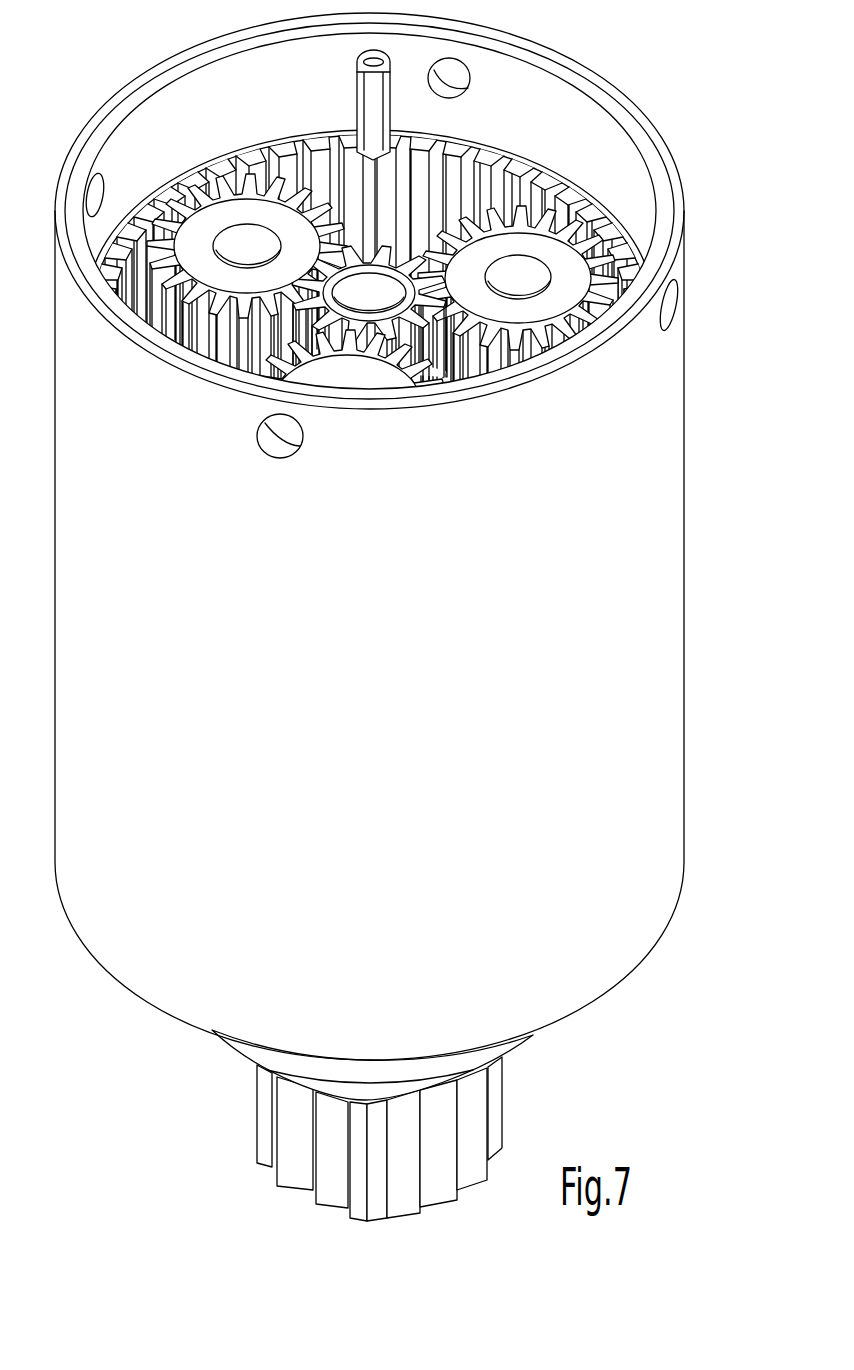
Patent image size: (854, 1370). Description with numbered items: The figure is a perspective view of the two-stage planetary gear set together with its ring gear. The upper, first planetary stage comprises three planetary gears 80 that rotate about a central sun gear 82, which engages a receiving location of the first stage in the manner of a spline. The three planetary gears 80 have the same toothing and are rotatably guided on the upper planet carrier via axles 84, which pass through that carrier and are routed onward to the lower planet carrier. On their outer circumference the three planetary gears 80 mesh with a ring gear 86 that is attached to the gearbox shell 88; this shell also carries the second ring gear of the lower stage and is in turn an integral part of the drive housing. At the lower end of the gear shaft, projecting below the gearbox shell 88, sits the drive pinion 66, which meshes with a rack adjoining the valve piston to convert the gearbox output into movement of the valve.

The drive pinion 66 is at (481, 1130).
The planetary gears 80 is at (213, 265).
The sun gear 82 is at (373, 292).
The axles 84 is at (245, 237).
The ring gear 86 is at (450, 187).
The gearbox shell 88 is at (500, 663).